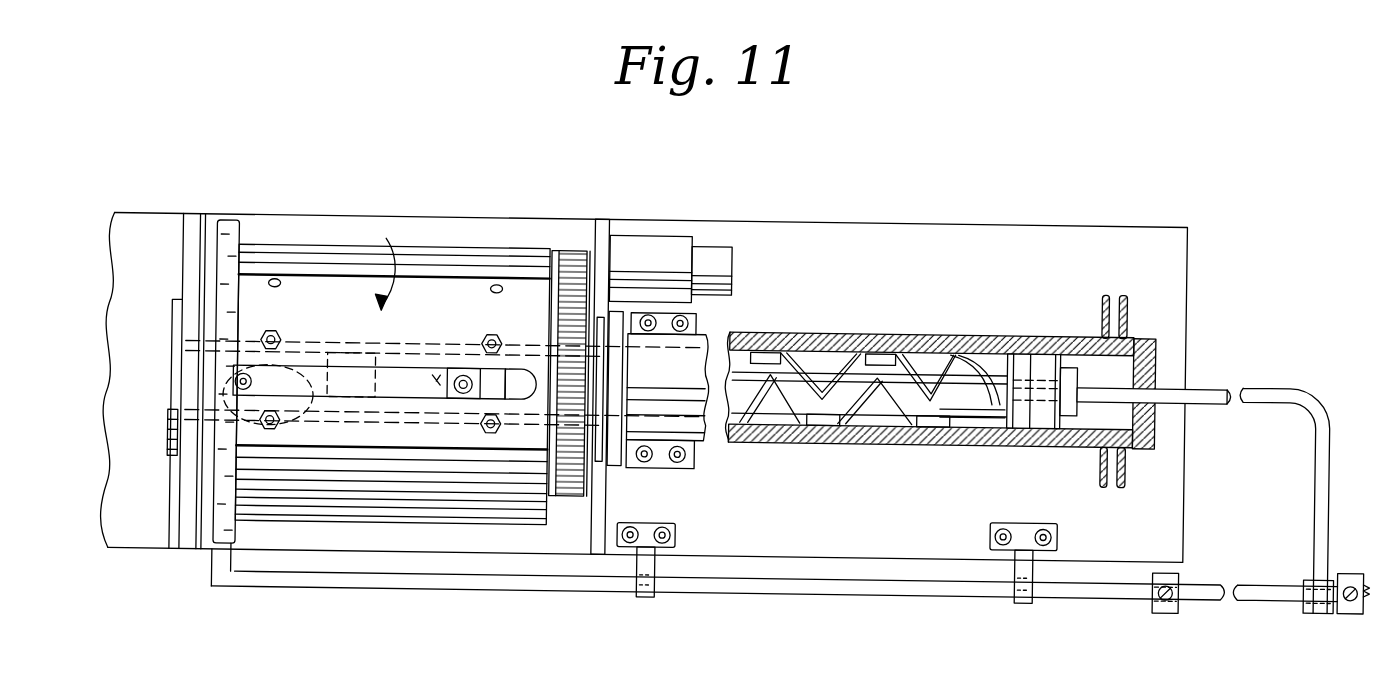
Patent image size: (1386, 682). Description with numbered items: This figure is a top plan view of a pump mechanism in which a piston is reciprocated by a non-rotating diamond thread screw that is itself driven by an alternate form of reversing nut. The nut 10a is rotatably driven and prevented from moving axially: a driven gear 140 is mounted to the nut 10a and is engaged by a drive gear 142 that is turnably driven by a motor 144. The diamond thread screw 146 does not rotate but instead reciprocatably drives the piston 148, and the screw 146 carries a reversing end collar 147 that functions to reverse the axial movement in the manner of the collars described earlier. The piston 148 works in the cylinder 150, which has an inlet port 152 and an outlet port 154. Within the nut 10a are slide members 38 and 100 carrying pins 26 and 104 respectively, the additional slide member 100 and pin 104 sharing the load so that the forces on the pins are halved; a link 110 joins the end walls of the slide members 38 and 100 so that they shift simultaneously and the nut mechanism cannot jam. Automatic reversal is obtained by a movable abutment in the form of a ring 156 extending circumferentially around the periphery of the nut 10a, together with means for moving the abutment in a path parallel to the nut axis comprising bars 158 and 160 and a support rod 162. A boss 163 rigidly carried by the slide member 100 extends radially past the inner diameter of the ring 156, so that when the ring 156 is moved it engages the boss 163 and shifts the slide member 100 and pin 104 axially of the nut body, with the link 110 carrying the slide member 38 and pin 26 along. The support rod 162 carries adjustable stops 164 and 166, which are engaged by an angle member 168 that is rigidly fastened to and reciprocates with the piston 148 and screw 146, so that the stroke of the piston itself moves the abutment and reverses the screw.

The nut 10a is at (421, 540).
The pin 26 is at (420, 404).
The slide member 38 is at (506, 372).
The slide member 100 is at (298, 372).
The pin 104 is at (302, 422).
The link 110 is at (392, 390).
The driven gear 140 is at (566, 500).
The drive gear 142 is at (568, 251).
The motor 144 is at (665, 248).
The diamond thread screw 146 is at (836, 346).
The reversing end collar 147 is at (986, 442).
The piston 148 is at (1045, 356).
The cylinder 150 is at (992, 340).
The inlet port 152 is at (1122, 483).
The outlet port 154 is at (1122, 289).
The ring 156 is at (222, 472).
The bar 158 is at (645, 600).
The bar 160 is at (1024, 602).
The support rod 162 is at (920, 582).
The boss 163 is at (246, 380).
The adjustable stop 164 is at (1167, 608).
The adjustable stop 166 is at (1352, 606).
The angle member 168 is at (1268, 381).